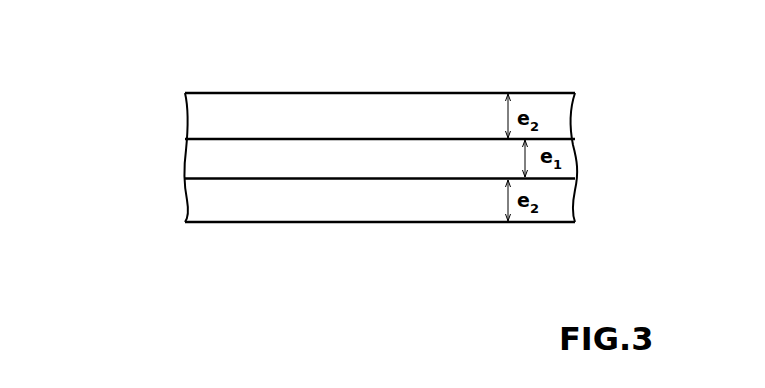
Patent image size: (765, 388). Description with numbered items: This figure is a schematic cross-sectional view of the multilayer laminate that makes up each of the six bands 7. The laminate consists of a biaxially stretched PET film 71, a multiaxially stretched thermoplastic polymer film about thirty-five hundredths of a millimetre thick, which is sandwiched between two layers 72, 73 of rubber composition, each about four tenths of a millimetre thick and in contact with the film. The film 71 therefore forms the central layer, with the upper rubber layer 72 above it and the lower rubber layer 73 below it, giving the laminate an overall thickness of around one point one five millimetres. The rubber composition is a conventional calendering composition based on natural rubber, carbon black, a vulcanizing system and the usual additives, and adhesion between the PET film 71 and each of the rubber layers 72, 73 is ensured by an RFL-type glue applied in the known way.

The band 7 is at (137, 164).
The biaxially stretched PET film 71 is at (352, 160).
The layer of rubber composition 72 is at (450, 110).
The layer of rubber composition 73 is at (427, 203).